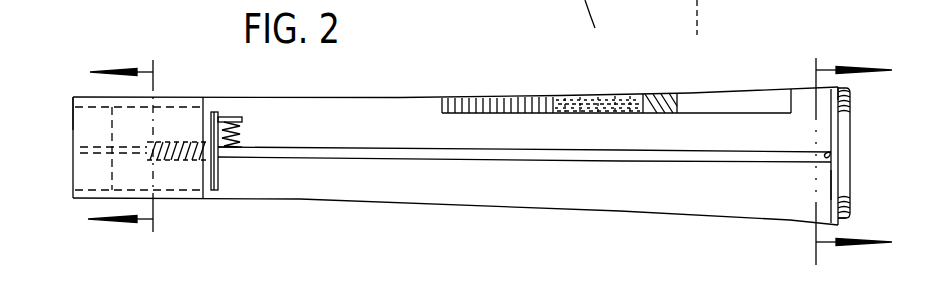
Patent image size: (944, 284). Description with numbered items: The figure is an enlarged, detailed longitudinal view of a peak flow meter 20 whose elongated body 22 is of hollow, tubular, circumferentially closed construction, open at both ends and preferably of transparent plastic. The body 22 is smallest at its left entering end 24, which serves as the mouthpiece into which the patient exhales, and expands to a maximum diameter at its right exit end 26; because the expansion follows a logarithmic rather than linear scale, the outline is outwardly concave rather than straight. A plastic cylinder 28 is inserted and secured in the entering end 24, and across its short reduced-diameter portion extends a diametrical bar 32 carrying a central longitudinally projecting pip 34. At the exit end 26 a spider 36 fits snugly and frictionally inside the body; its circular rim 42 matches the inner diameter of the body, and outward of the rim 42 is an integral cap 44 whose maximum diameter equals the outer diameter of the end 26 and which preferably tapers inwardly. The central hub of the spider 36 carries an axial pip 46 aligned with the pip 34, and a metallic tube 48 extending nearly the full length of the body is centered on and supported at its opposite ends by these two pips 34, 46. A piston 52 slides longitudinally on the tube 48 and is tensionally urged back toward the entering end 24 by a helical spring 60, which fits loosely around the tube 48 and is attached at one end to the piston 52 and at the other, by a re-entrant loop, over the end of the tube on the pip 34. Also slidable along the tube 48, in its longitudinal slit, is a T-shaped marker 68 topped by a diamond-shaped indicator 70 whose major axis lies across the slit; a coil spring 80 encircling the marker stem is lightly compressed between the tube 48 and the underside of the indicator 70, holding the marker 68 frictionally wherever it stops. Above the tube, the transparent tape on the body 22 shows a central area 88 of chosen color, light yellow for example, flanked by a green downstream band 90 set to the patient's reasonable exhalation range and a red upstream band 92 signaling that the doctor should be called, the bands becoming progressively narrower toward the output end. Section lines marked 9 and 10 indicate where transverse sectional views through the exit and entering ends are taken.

The peak flow meter 20 is at (455, 180).
The elongated body 22 is at (475, 207).
The entering end 24 is at (73, 95).
The exit end 26 is at (850, 88).
The plastic cylinder 28 is at (187, 140).
The diametrical bar 32 is at (82, 158).
The pip 34 is at (122, 147).
The spider 36 is at (856, 150).
The circular rim 42 is at (835, 181).
The cap 44 is at (847, 217).
The pip 46 is at (822, 151).
The metallic tube 48 is at (458, 157).
The piston 52 is at (217, 207).
The helical spring 60 is at (229, 82).
The marker 68 is at (252, 128).
The indicator 70 is at (230, 143).
The coil spring 80 is at (237, 140).
The central area 88 is at (593, 96).
The downstream band 90 is at (660, 94).
The upstream band 92 is at (527, 97).
The section line 9- 9 is at (834, 154).
The section line 10- 10 is at (153, 139).